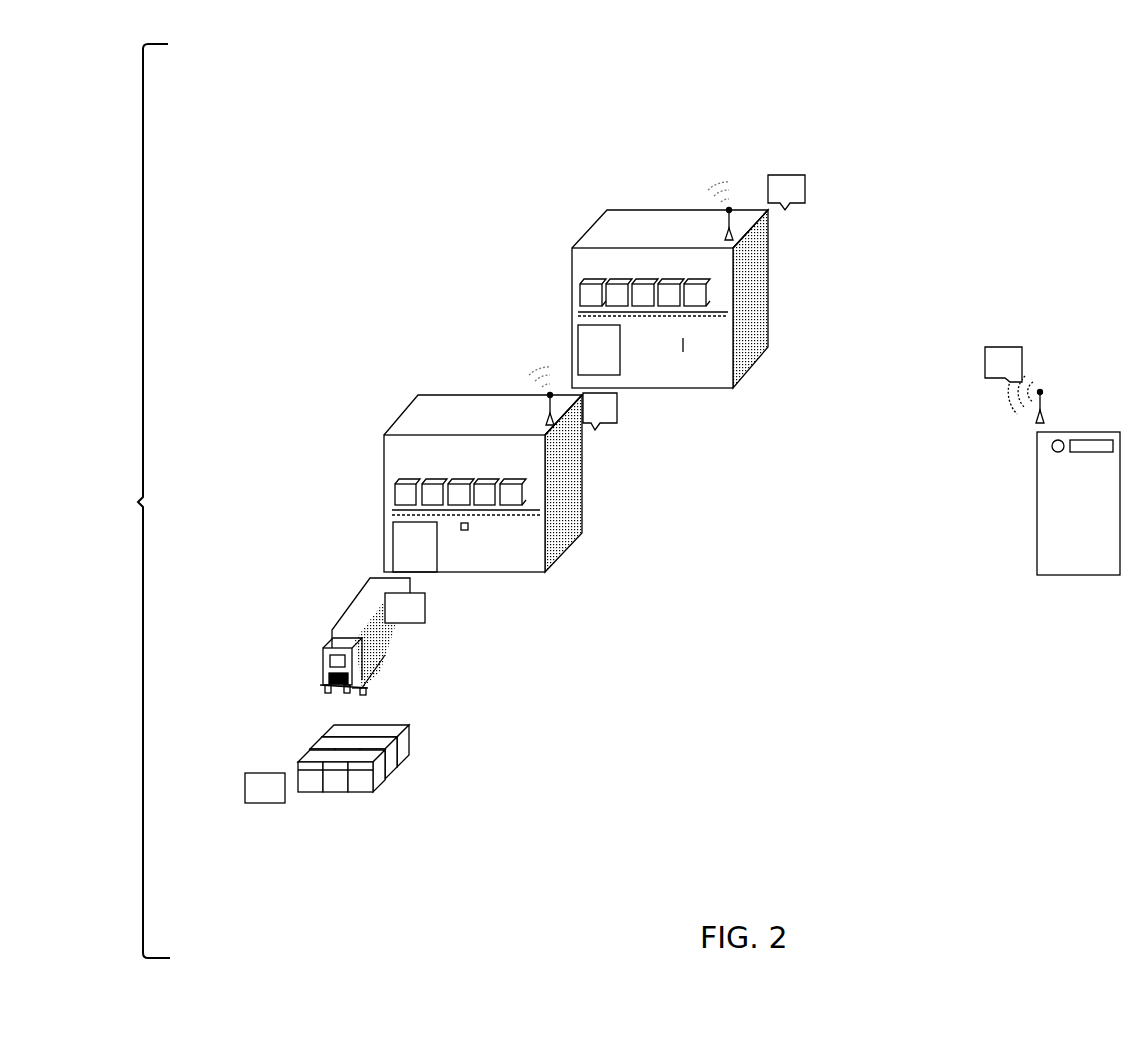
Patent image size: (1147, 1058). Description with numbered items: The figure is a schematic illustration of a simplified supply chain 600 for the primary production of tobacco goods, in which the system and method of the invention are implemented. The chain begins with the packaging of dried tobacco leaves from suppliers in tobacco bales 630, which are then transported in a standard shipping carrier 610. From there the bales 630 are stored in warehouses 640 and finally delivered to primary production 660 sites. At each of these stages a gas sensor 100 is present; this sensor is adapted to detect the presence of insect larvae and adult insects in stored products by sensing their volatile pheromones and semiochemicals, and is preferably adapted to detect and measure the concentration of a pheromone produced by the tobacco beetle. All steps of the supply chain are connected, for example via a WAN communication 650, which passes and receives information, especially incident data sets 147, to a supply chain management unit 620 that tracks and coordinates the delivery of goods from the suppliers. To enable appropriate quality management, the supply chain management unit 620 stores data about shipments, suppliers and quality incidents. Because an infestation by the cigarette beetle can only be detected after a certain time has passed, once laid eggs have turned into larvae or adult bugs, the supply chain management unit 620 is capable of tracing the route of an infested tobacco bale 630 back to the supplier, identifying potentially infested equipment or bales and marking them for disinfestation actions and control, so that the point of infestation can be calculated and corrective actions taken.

The supply chain 600 is at (138, 502).
The standard shipping carrier 610 is at (328, 605).
The supply chain management unit 620 is at (1088, 412).
The tobacco bales 630 is at (673, 282).
The warehouses 640 is at (362, 465).
The WAN communication 650 is at (733, 248).
The primary production 660 is at (520, 290).
The gas sensor 100 is at (683, 338).
The incident data sets 147 is at (410, 608).